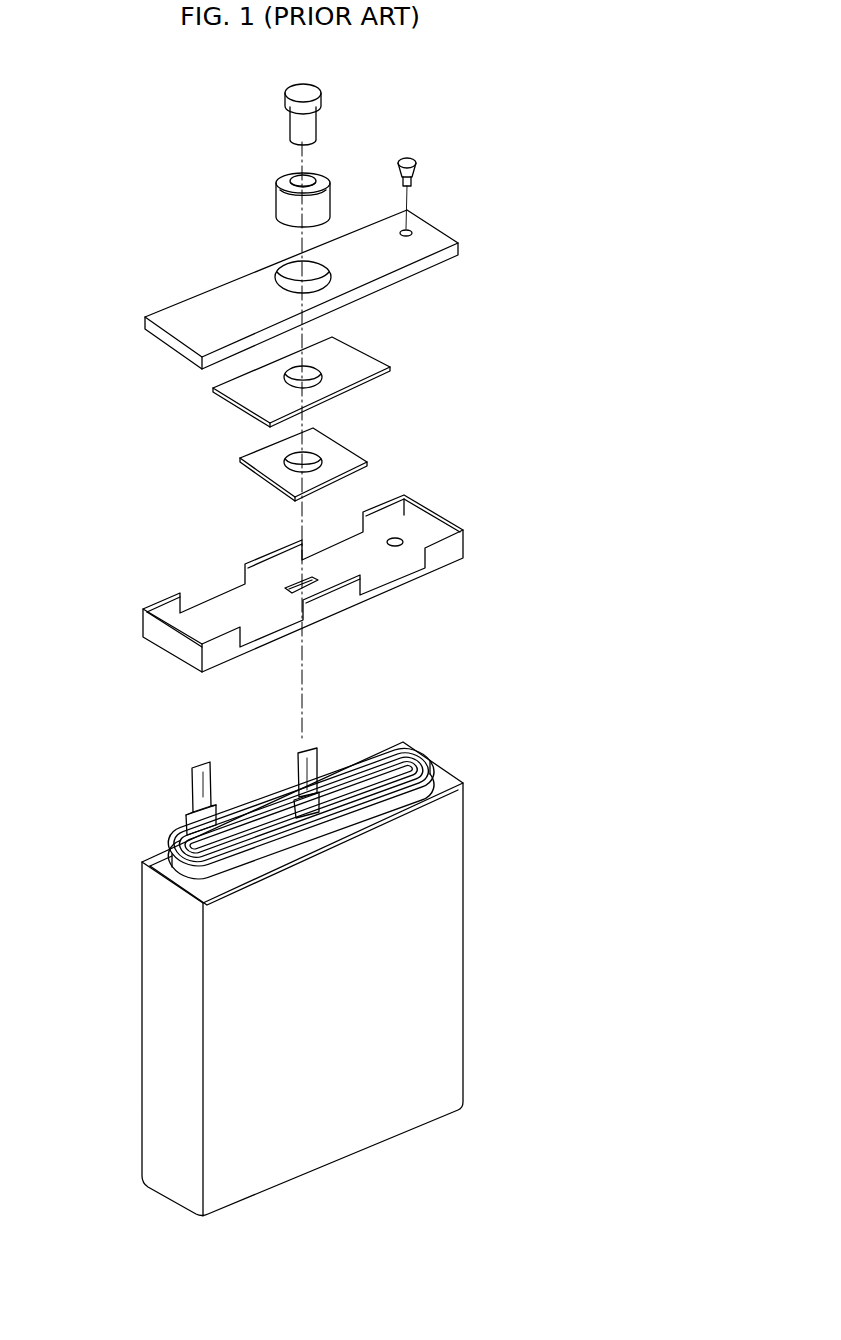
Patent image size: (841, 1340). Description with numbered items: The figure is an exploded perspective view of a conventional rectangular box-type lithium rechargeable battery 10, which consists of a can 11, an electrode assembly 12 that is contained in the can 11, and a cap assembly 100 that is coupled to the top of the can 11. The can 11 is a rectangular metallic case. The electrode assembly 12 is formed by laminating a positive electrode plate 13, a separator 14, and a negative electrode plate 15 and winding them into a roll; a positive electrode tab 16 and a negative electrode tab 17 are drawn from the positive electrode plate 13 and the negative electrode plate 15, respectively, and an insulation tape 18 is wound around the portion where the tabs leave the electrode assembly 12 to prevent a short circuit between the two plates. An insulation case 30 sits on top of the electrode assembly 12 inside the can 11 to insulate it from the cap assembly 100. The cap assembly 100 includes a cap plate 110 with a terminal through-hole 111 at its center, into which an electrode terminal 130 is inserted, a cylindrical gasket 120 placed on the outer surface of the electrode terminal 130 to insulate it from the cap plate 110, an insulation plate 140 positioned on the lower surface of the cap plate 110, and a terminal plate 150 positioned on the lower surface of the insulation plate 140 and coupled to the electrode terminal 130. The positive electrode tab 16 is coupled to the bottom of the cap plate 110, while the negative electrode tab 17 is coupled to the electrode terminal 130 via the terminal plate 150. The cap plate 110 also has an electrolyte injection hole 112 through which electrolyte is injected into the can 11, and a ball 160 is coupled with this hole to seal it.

The rectangular-type lithium rechargeable battery 10 is at (518, 138).
The can 11 is at (445, 824).
The electrode assembly 12 is at (490, 714).
The positive electrode plate 13 is at (301, 807).
The separator 14 is at (301, 807).
The negative electrode plate 15 is at (301, 807).
The positive electrode tab 16 is at (200, 798).
The negative electrode tab 17 is at (310, 774).
The insulation tape 18 is at (432, 762).
The insulation case 30 is at (122, 630).
The cap assembly 100 is at (118, 331).
The cap plate 110 is at (447, 228).
The terminal through-hole 111 is at (281, 258).
The electrolyte injection hole 112 is at (414, 225).
The cylindrical gasket 120 is at (280, 176).
The electrode terminal 130 is at (284, 90).
The insulation plate 140 is at (218, 397).
The terminal plate 150 is at (243, 463).
The ball 160 is at (404, 158).